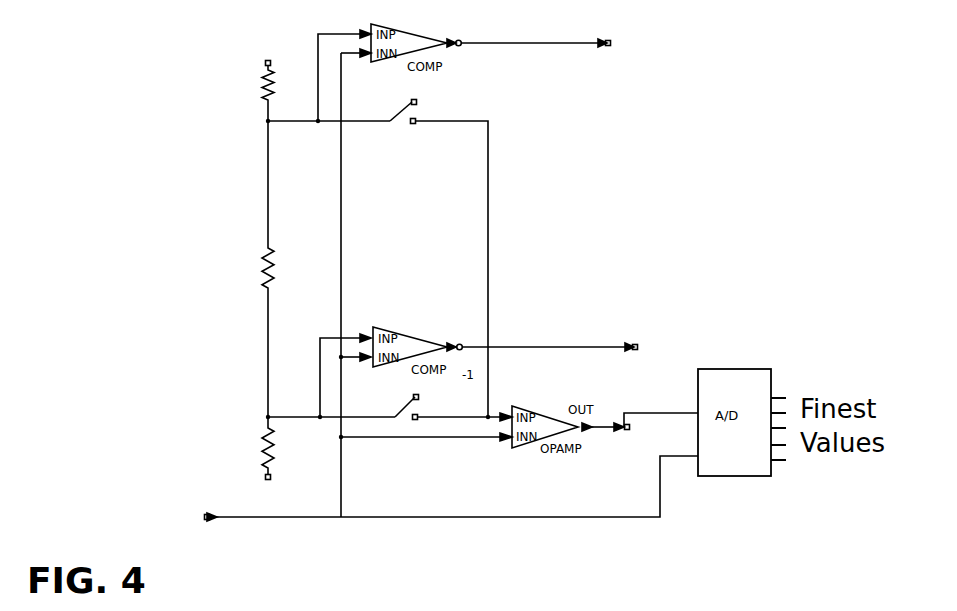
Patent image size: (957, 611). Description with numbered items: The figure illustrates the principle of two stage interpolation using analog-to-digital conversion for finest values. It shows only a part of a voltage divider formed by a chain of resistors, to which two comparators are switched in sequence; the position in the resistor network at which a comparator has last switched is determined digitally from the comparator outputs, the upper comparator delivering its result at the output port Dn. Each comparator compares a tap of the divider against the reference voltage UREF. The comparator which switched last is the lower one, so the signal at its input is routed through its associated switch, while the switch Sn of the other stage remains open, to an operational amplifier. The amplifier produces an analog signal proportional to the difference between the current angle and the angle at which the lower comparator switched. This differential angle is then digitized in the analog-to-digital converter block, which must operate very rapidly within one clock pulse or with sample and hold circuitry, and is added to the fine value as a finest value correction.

The output port of comparator COMP Dn is at (548, 44).
The switch Sn is at (439, 252).
The reference voltage UREF is at (426, 490).